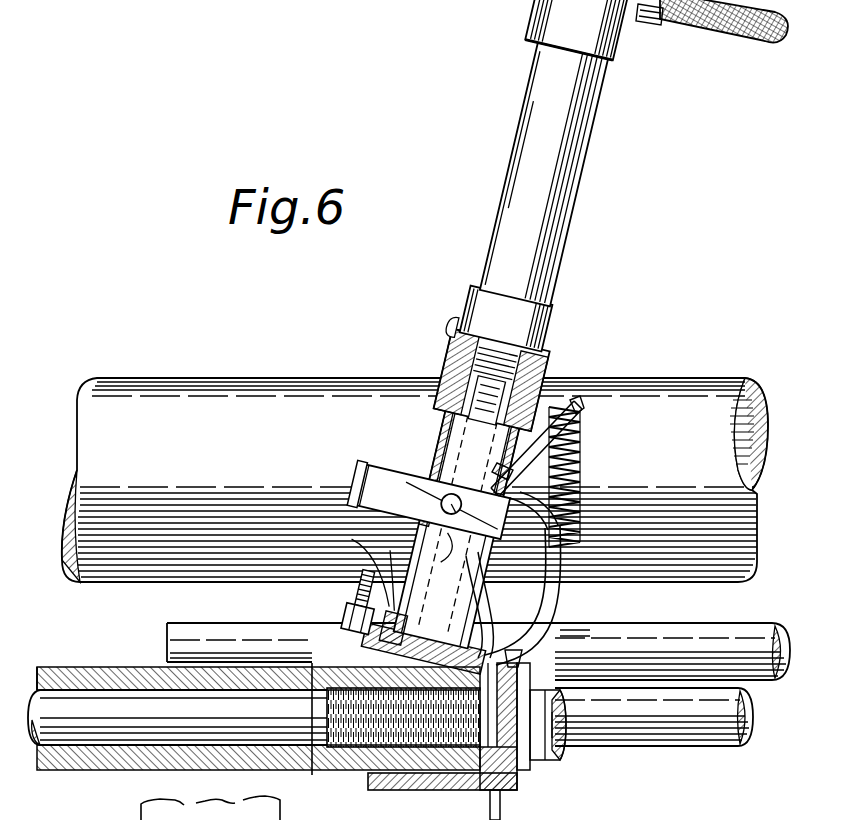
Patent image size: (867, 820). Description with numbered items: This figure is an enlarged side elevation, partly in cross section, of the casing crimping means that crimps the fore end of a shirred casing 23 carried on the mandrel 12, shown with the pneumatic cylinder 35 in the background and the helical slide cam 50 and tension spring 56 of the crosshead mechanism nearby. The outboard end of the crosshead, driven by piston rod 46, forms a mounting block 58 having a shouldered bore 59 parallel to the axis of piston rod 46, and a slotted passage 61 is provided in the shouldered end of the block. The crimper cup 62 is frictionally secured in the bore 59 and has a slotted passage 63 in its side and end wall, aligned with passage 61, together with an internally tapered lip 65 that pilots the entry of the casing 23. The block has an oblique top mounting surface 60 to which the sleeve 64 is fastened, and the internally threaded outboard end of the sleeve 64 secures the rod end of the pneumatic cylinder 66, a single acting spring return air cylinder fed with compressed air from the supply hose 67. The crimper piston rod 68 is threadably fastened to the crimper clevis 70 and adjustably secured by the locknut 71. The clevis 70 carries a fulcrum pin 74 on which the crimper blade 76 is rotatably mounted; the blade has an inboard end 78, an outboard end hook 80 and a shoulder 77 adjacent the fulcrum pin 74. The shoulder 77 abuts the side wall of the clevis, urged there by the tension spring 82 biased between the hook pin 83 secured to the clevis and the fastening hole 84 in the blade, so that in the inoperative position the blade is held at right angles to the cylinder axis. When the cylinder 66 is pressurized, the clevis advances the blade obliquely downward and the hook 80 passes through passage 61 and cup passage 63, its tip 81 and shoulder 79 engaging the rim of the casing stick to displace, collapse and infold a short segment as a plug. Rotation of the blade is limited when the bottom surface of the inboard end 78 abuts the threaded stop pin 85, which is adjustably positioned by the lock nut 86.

The mandrel 12 is at (70, 733).
The shirred casing 23 is at (120, 643).
The pneumatic cylinder 35 is at (672, 392).
The piston rod 46 is at (693, 747).
The slide cam 50 is at (747, 637).
The tension spring 56 is at (510, 741).
The mounting block 58 is at (470, 766).
The shouldered bore 59 is at (373, 791).
The oblique top mounting surface 60 is at (365, 650).
The slotted passage 61 is at (521, 656).
The crimper cup 62 is at (350, 773).
The slotted passage 63 is at (548, 731).
The sleeve 64 is at (437, 391).
The internally tapered lip 65 is at (317, 761).
The pneumatic cylinder 66 is at (520, 158).
The supply hose 67 is at (693, 26).
The crimper piston rod 68 is at (437, 386).
The crimper clevis 70 is at (461, 449).
The locknut 71 is at (462, 411).
The fulcrum pin 74 is at (448, 506).
The crimper blade 76 is at (372, 468).
The shoulder 77 is at (512, 488).
The inboard end 78 is at (368, 490).
The shoulder 79 is at (568, 625).
The outboard end hook 80 is at (556, 592).
The tip 81 is at (496, 621).
The tension spring 82 is at (554, 478).
The hook pin 83 is at (577, 416).
The fastening hole 84 is at (494, 501).
The threaded stop pin 85 is at (350, 560).
The lock nut 86 is at (340, 600).